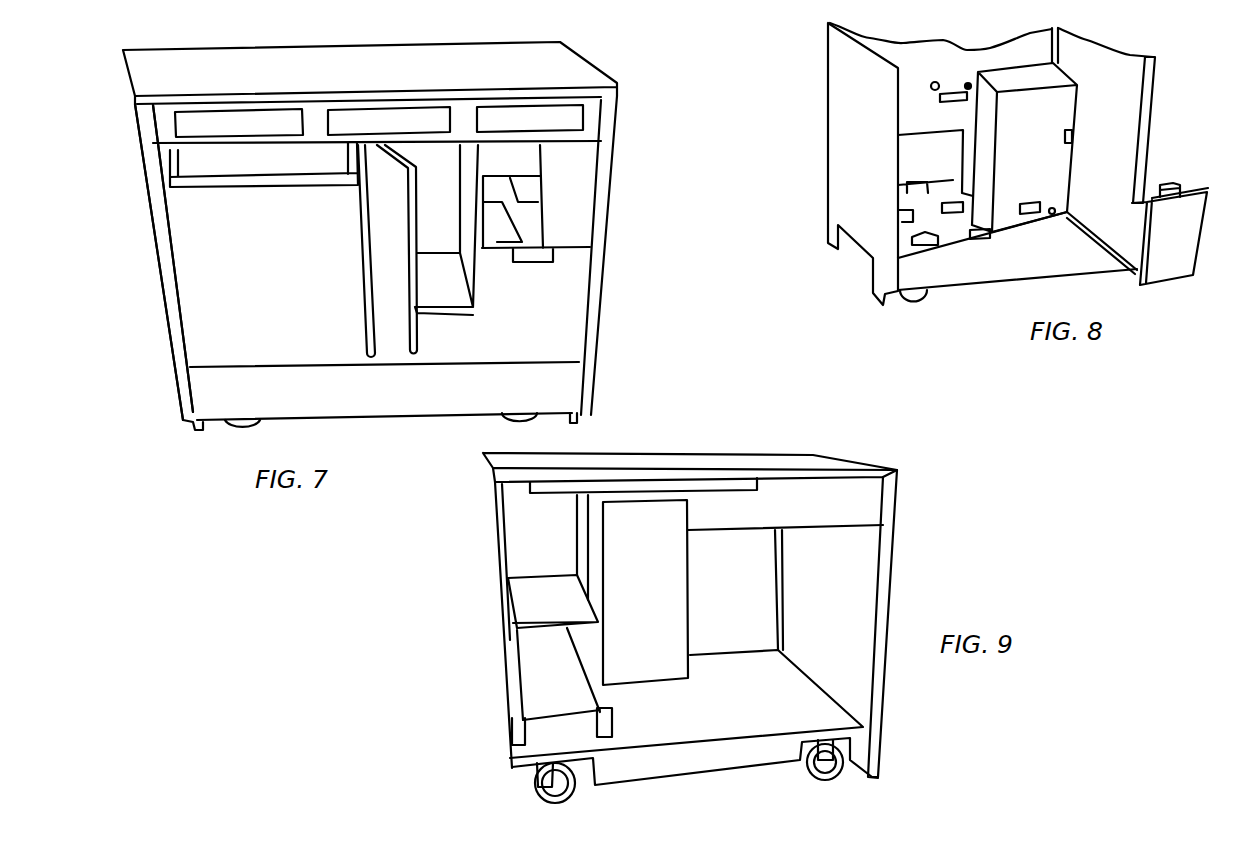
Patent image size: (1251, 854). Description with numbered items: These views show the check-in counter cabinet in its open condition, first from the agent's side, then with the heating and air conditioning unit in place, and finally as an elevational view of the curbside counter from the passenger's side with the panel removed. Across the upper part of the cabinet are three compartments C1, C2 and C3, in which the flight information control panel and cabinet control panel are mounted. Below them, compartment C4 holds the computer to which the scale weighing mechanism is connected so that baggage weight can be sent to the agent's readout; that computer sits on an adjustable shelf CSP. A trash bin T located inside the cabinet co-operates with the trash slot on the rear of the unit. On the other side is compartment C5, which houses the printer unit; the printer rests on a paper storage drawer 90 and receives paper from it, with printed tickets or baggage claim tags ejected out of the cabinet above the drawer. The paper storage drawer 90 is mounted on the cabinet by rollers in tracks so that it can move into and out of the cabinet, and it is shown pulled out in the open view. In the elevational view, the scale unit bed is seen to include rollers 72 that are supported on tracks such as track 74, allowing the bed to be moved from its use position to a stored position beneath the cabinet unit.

In FIG. 7, the compartment C1 is at (290, 117).
In FIG. 7, the compartment C2 is at (400, 118).
In FIG. 7, the compartment C3 is at (502, 112).
In FIG. 7, the compartment C4 is at (185, 160).
In FIG. 7, the compartment C5 is at (583, 167).
In FIG. 7, the trash bin T is at (463, 190).
In FIG. 7, the adjustable shelf CSP is at (188, 235).
In FIG. 8, the paper storage drawer 90 is at (1163, 168).
In FIG. 9, the track 74 is at (722, 757).
In FIG. 9, the rollers 72 is at (807, 753).